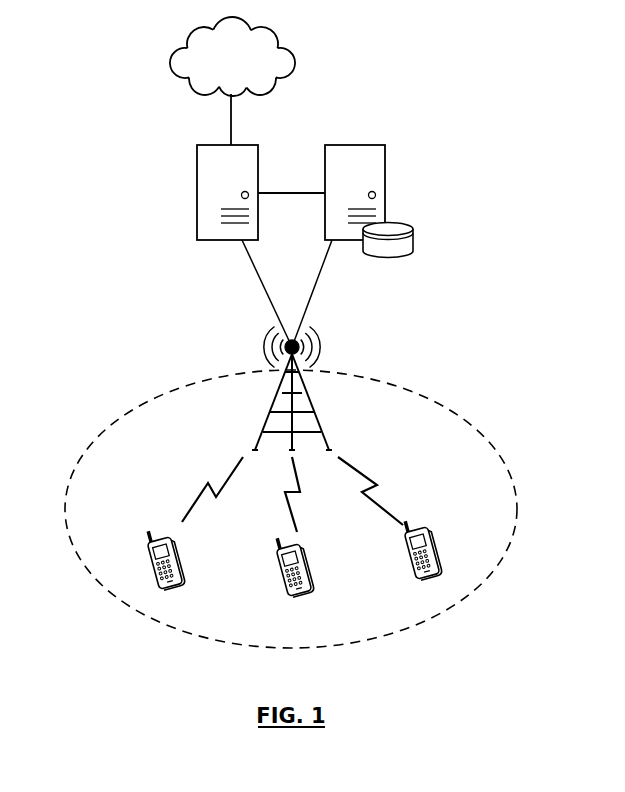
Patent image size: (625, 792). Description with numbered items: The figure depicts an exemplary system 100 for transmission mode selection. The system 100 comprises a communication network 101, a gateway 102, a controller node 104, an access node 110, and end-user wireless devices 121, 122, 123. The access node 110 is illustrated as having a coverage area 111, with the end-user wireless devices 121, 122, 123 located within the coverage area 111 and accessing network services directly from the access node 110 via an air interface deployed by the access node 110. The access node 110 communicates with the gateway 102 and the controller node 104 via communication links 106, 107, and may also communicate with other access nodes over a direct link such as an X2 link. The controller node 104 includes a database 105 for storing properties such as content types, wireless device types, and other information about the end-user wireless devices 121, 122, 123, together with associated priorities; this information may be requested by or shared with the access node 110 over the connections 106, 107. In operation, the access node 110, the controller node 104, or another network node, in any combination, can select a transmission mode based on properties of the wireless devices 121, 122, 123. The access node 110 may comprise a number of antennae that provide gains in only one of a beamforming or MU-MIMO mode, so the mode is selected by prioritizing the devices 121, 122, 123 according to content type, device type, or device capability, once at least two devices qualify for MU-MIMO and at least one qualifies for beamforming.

The system 100 is at (349, 71).
The communication network 101 is at (214, 67).
The gateway 102 is at (197, 163).
The controller node 104 is at (385, 160).
The database 105 is at (406, 228).
The communication link 106 is at (257, 273).
The communication link 107 is at (320, 273).
The access node 110 is at (268, 432).
The coverage area 111 is at (130, 607).
The end-user wireless device 121 is at (171, 588).
The end-user wireless device 122 is at (300, 594).
The end-user wireless device 123 is at (432, 577).